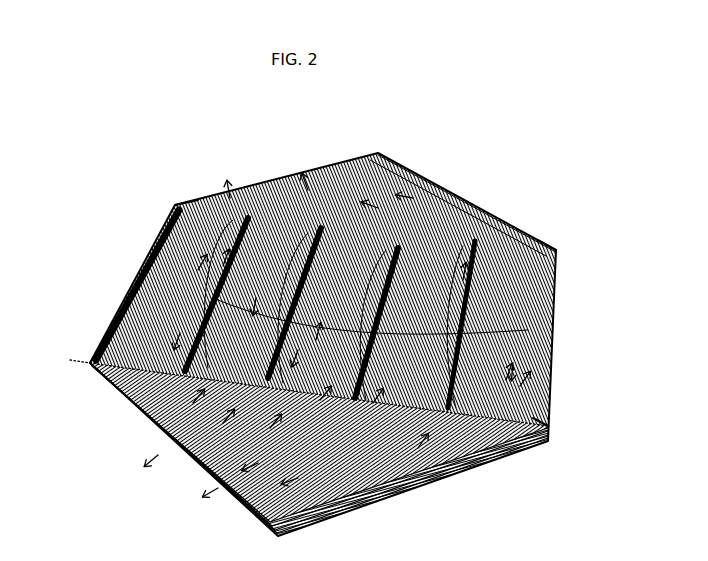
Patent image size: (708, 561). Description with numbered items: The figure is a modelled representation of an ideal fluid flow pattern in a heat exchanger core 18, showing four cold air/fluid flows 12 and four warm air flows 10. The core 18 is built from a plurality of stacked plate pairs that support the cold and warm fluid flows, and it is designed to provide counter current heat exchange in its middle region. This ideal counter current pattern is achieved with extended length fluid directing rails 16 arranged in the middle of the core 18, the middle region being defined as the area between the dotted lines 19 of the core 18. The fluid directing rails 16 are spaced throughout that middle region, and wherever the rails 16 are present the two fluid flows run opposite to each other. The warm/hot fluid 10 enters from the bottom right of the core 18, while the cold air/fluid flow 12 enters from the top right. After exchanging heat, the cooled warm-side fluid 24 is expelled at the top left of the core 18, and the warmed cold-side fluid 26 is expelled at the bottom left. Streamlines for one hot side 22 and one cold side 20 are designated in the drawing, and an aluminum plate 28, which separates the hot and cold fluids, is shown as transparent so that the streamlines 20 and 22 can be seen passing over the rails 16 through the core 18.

The warm air flow 10 is at (444, 476).
The cold air/fluid flow 12 is at (473, 186).
The fluid directing rail 16 is at (370, 263).
The core 18 is at (97, 320).
The dotted line 19 is at (549, 242).
The cold side streamline 20 is at (168, 197).
The hot side streamline 22 is at (121, 280).
The cooled warm-side fluid 24 is at (253, 168).
The warmed cold-side fluid 26 is at (150, 428).
The aluminum plate 28 is at (495, 293).